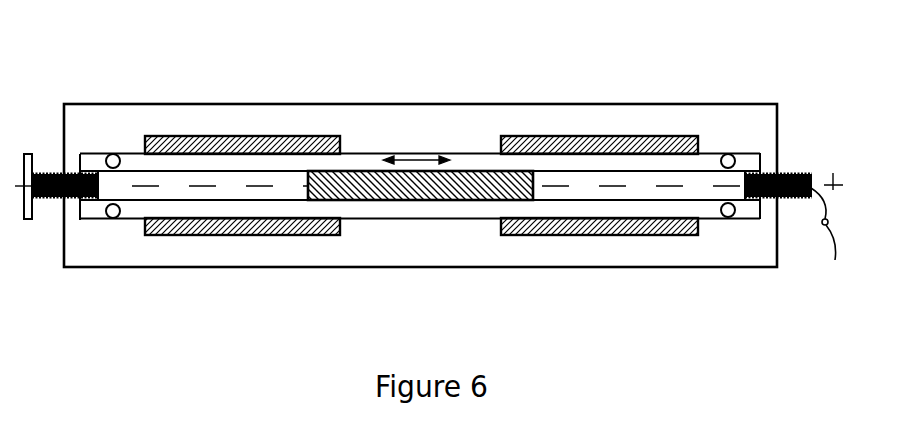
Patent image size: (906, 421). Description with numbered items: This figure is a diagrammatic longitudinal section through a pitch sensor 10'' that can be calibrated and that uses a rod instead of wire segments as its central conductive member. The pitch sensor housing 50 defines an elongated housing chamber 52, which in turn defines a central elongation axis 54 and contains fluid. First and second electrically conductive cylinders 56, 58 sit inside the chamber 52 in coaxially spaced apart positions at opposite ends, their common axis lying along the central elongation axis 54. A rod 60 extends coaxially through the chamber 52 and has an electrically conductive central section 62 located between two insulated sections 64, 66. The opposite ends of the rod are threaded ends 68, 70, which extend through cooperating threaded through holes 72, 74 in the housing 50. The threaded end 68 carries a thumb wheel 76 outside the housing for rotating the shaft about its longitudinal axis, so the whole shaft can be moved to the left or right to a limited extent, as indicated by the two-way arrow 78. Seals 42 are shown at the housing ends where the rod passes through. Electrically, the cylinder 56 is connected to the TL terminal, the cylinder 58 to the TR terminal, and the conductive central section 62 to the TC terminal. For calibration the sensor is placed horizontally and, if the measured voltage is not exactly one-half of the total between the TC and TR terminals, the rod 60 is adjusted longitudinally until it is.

The pitch sensor 10'' is at (553, 54).
The pitch sensor housing 50 is at (367, 245).
The threaded through hole 72 is at (70, 170).
The threaded through hole 74 is at (767, 170).
The first electrically conductive cylinder 56 is at (223, 226).
The second electrically conductive cylinder 58 is at (590, 231).
The TL terminal TL is at (165, 235).
The TR terminal TR is at (630, 237).
The insulated section 64 is at (235, 180).
The insulated section 66 is at (575, 185).
The rod 60 is at (700, 190).
The electrically conductive central section 62 is at (447, 190).
The elongated housing chamber 52 is at (492, 207).
The two-way arrow 78 is at (413, 158).
The O-ring seals 42 is at (110, 218).
The threaded end 68 is at (47, 199).
The threaded end 70 is at (787, 199).
The thumb wheel 76 is at (28, 152).
The central elongation axis 54 is at (833, 172).
The TC terminal TC is at (828, 237).